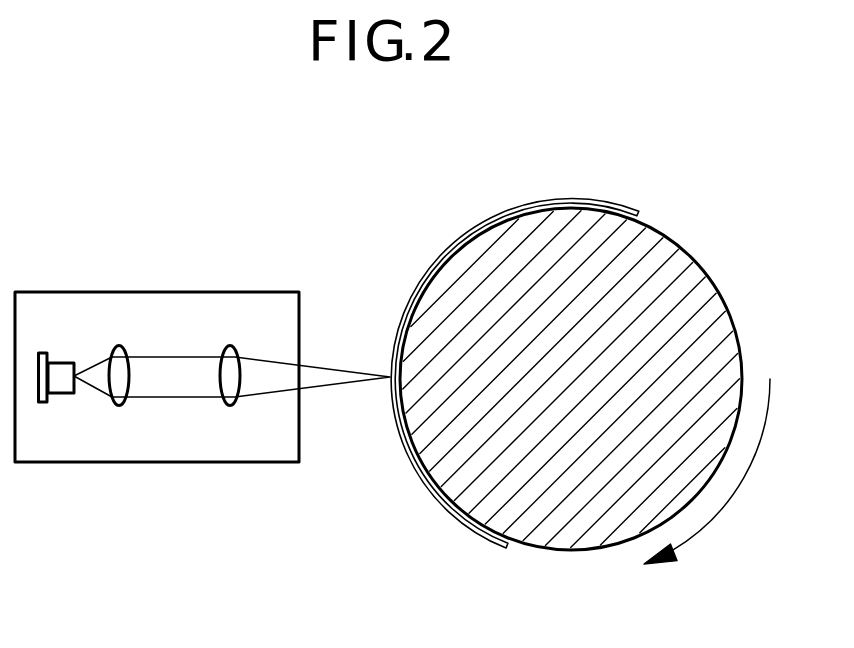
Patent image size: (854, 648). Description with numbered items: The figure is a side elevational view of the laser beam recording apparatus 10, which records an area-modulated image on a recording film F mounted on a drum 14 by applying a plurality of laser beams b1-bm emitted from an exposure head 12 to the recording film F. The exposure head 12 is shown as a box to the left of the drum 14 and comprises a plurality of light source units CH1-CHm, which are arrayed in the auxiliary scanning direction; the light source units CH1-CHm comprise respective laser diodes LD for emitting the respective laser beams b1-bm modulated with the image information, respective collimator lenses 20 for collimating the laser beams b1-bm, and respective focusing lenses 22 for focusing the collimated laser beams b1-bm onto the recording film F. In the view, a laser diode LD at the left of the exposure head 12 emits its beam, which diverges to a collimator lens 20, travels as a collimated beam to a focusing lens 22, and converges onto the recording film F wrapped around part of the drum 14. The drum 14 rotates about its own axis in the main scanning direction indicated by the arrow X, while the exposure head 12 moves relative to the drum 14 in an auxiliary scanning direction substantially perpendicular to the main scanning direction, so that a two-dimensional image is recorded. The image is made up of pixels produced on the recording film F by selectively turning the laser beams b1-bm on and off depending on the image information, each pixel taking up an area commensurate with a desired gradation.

The laser beam recording apparatus 10 is at (253, 205).
The exposure head 12 is at (155, 290).
The drum 14 is at (682, 327).
The collimator lens 20 is at (118, 405).
The focusing lens 22 is at (230, 405).
The laser diode LD is at (57, 378).
The recording film F is at (576, 200).
The main scanning direction X is at (714, 471).
The laser beams b1-bm is at (332, 367).
The light source units CH1-CHm is at (165, 515).